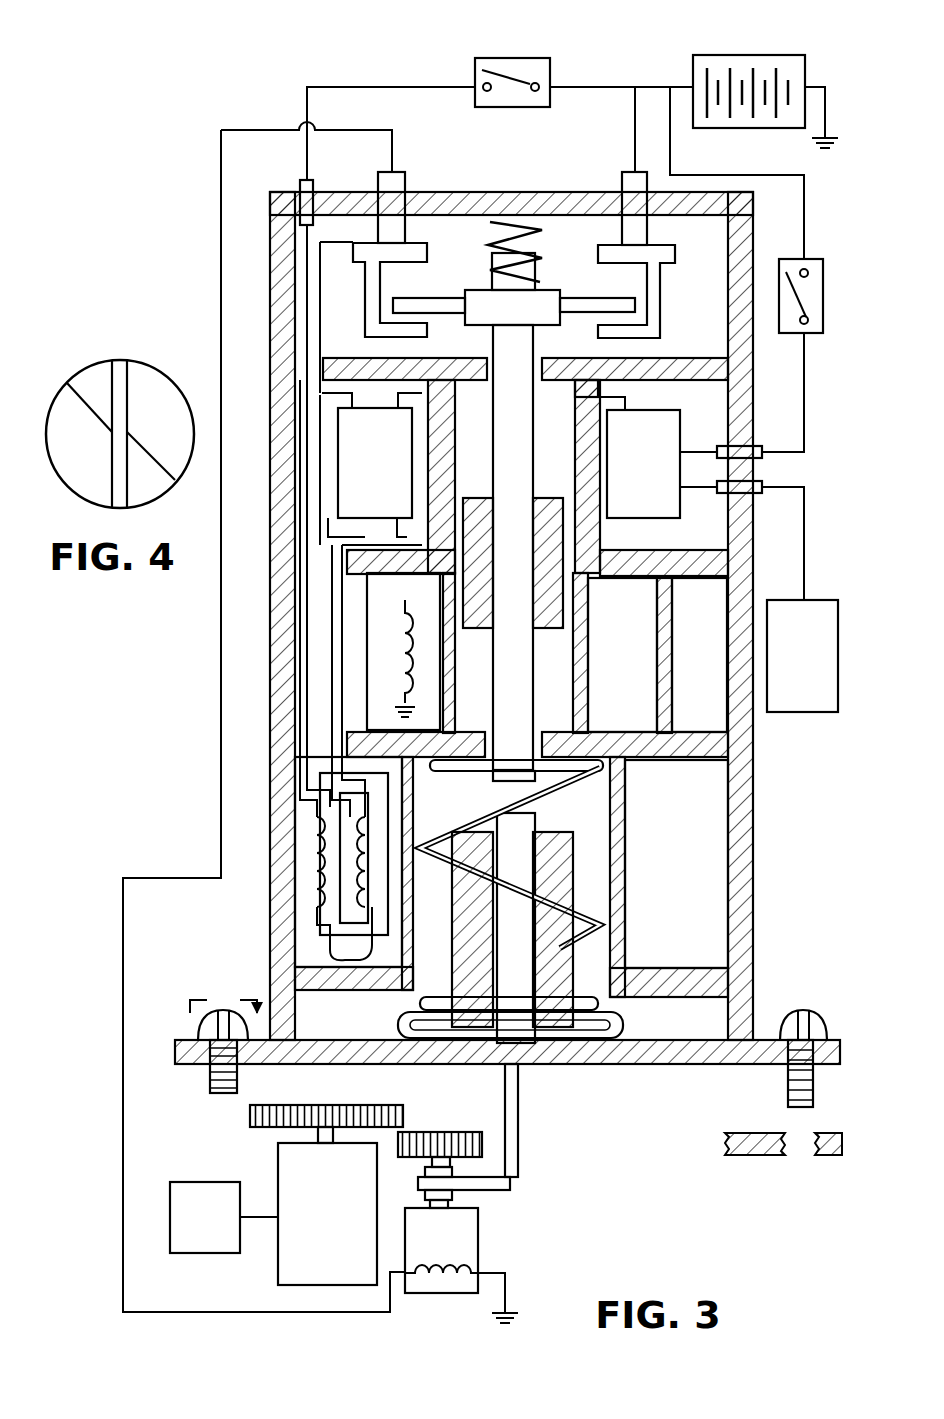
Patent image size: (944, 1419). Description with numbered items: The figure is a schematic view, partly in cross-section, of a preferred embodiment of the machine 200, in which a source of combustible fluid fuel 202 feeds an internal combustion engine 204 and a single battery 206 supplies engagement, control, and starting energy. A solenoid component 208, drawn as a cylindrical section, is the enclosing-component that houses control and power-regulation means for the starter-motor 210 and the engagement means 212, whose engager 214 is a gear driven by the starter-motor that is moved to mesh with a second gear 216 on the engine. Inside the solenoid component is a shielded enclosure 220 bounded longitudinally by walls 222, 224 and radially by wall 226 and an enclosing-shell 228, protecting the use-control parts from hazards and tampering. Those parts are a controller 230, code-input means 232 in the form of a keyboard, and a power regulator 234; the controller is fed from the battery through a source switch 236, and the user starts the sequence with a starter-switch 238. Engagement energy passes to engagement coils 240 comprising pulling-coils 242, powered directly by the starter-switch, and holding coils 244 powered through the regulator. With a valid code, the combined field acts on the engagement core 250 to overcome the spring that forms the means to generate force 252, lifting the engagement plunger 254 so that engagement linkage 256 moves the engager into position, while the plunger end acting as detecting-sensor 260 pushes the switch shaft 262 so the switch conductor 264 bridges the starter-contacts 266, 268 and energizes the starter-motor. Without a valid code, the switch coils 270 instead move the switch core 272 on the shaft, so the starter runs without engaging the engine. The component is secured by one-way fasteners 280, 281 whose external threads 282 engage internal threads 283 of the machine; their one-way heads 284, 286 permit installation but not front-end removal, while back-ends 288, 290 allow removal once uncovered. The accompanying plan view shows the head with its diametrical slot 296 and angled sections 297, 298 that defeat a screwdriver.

In FIG. 3, the machine 200 is at (142, 126).
In FIG. 3, the source of combustible fluid fuel 202 is at (220, 1192).
In FIG. 3, the internal combustion engine 204 is at (287, 1170).
In FIG. 3, the battery 206 is at (700, 55).
In FIG. 3, the solenoid component 208 is at (650, 1160).
In FIG. 3, the starter-motor 210 is at (475, 1237).
In FIG. 3, the engagement means 212 is at (535, 1160).
In FIG. 3, the engager 214 is at (450, 1134).
In FIG. 3, the second gear 216 is at (355, 1105).
In FIG. 3, the shielded enclosure 220 is at (256, 383).
In FIG. 3, the wall 222 is at (705, 528).
In FIG. 3, the wall 224 is at (742, 400).
In FIG. 3, the wall 226 is at (595, 533).
In FIG. 3, the enclosing-shell 228 is at (748, 430).
In FIG. 3, the controller 230 is at (623, 480).
In FIG. 3, the code-input means 232 is at (825, 612).
In FIG. 3, the power regulator 234 is at (355, 482).
In FIG. 3, the source switch 236 is at (824, 268).
In FIG. 3, the starter-switch 238 is at (478, 60).
In FIG. 3, the engagement coils 240 is at (258, 848).
In FIG. 3, the pulling-coils 242 is at (310, 912).
In FIG. 3, the holding coils 244 is at (323, 948).
In FIG. 3, the engagement core 250 is at (567, 875).
In FIG. 3, the means to generate force 252 is at (590, 783).
In FIG. 3, the engagement plunger 254 is at (528, 818).
In FIG. 3, the engagement linkage 256 is at (518, 1112).
In FIG. 3, the detecting-sensor 260 is at (588, 792).
In FIG. 3, the switch shaft 262 is at (528, 664).
In FIG. 3, the switch conductor 264 is at (572, 303).
In FIG. 3, the starter-contact 266 is at (612, 245).
In FIG. 3, the starter-contact 268 is at (415, 245).
In FIG. 3, the switch coils 270 is at (388, 667).
In FIG. 3, the switch core 272 is at (468, 600).
In FIG. 3, the one-way fastener 280 is at (242, 1076).
In FIG. 3, the one-way fastener 281 is at (822, 998).
In FIG. 3, the external threads 282 is at (788, 1085).
In FIG. 3, the internal threads 283 is at (812, 1145).
In FIG. 3, the one-way head 284 is at (207, 1027).
In FIG. 4, the one-way head 284 is at (140, 338).
In FIG. 3, the one-way head 286 is at (803, 1012).
In FIG. 3, the back-end 288 is at (210, 1093).
In FIG. 3, the back-end 290 is at (790, 1104).
In FIG. 4, the diametrical slot 296 is at (118, 368).
In FIG. 4, the angled section 297 is at (95, 373).
In FIG. 3, the angled section 298 is at (235, 1020).
In FIG. 4, the angled section 298 is at (145, 475).